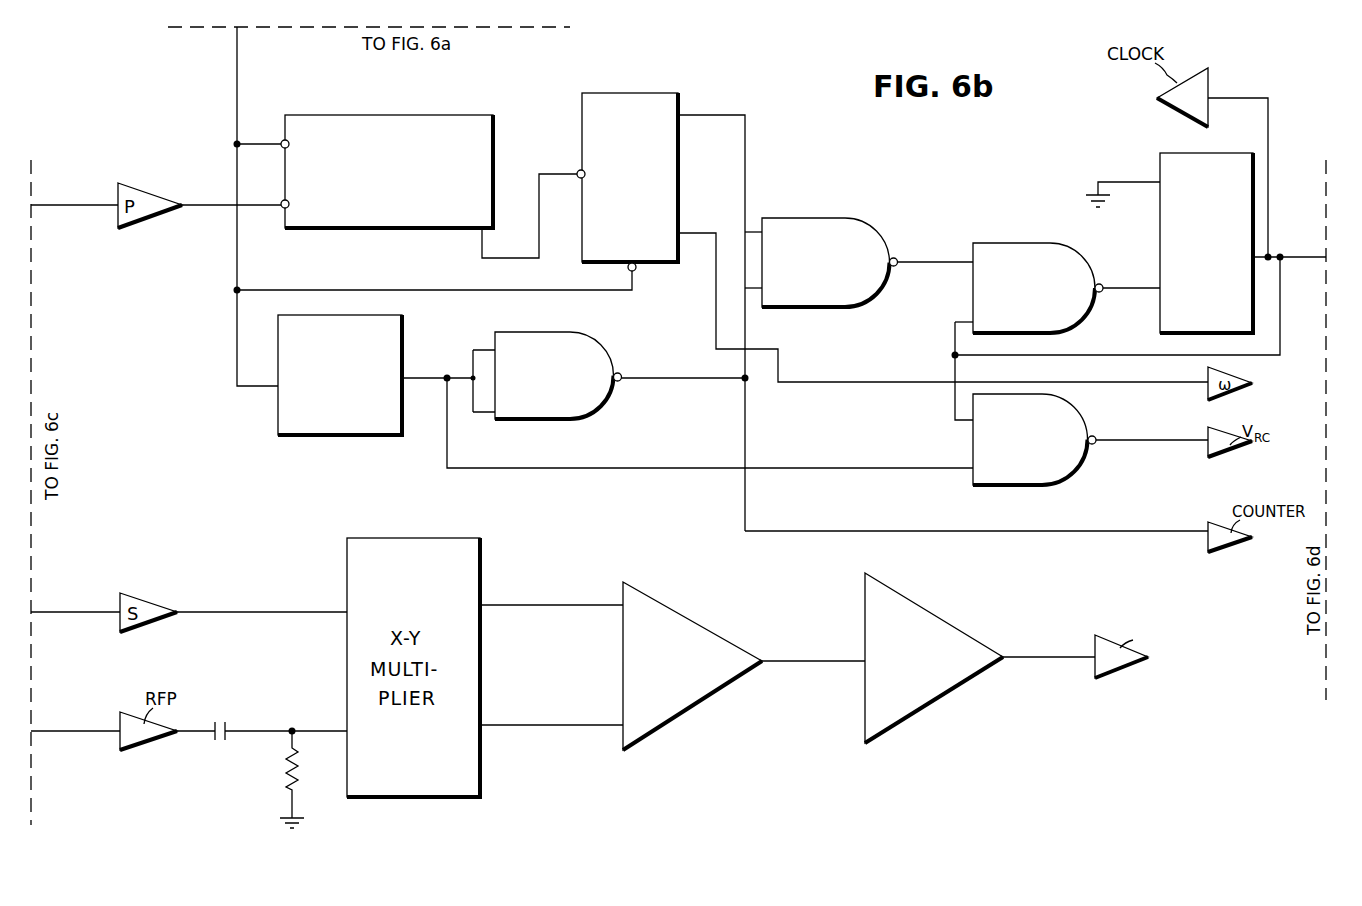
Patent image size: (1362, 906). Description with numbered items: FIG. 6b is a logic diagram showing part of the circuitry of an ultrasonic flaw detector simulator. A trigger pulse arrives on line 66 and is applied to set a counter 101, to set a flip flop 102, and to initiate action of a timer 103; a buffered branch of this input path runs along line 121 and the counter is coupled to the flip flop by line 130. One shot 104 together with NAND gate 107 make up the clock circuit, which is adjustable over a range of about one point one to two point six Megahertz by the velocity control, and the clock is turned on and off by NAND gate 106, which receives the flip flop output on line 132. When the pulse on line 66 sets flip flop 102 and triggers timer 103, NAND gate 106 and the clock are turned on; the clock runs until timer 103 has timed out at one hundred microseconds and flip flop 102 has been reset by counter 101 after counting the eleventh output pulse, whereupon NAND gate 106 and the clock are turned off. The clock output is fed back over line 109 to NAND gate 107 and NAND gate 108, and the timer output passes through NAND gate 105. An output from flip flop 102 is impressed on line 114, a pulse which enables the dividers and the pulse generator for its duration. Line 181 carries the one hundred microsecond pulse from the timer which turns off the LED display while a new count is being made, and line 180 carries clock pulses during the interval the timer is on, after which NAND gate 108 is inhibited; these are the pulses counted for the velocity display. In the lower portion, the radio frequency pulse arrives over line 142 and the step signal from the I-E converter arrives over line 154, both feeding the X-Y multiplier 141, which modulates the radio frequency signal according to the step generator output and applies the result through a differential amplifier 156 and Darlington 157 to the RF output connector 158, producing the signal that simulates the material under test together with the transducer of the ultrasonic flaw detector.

The line 66 is at (237, 90).
The counter 101 is at (333, 115).
The flip flop 102 is at (581, 100).
The timer 103 is at (404, 326).
The one shot 104 is at (1159, 161).
The NAND gate 105 is at (598, 340).
The NAND gate 106 is at (816, 218).
The NAND gate 107 is at (990, 243).
The NAND gate 108 is at (1080, 420).
The line 109 is at (1128, 355).
The line 114 is at (834, 382).
The line 121 is at (212, 208).
The line 130 is at (539, 200).
The line 132 is at (730, 115).
The X-Y multiplier 141 is at (485, 708).
The line 142 is at (257, 728).
The line 154 is at (270, 610).
The differential amplifier 156 is at (706, 630).
The Darlington 157 is at (966, 632).
The RF output connector 158 is at (1092, 640).
The line 180 is at (1144, 442).
The line 181 is at (1118, 531).